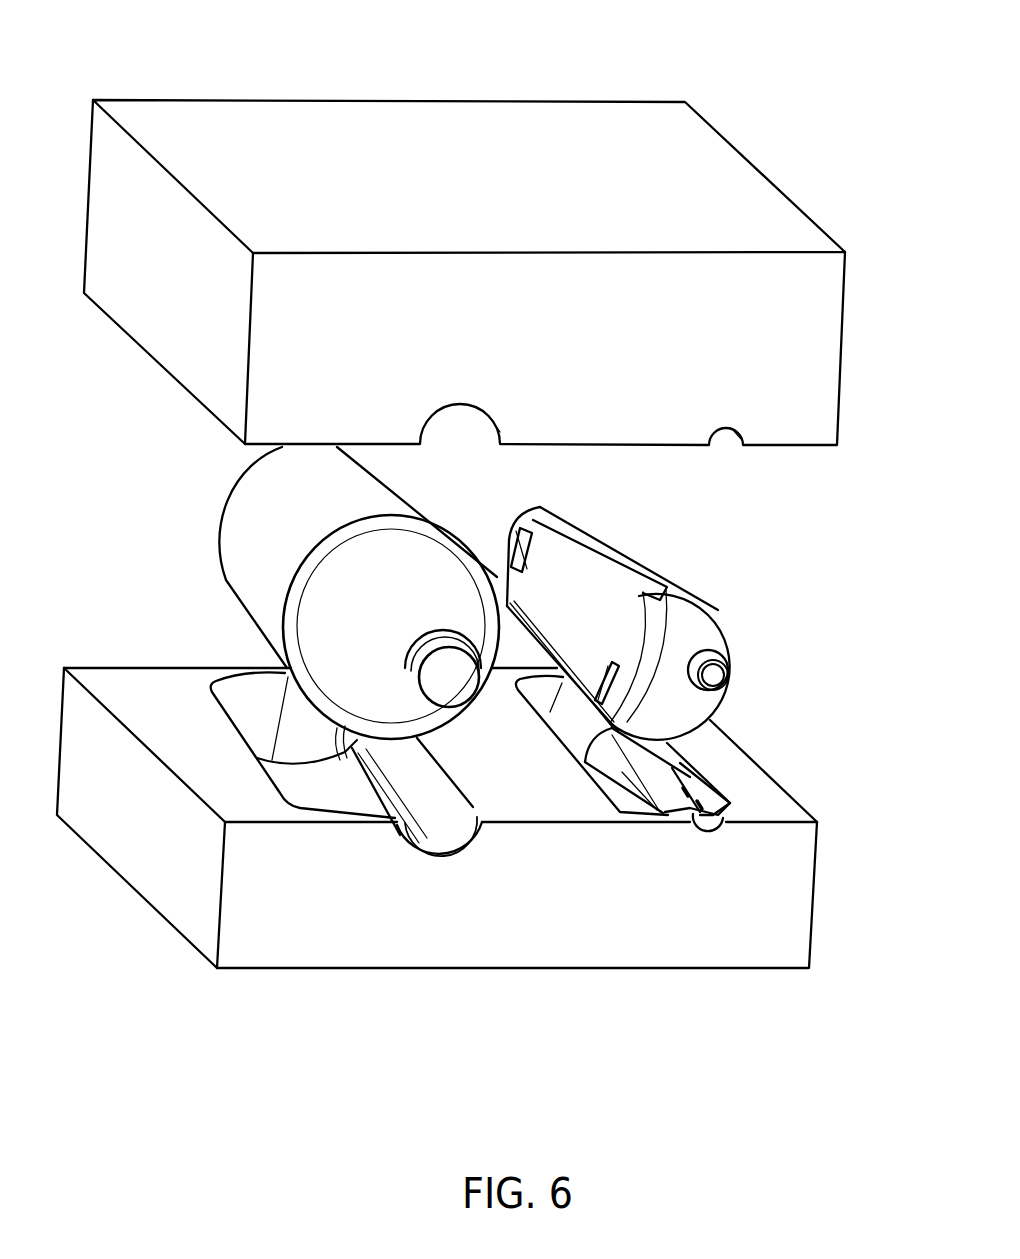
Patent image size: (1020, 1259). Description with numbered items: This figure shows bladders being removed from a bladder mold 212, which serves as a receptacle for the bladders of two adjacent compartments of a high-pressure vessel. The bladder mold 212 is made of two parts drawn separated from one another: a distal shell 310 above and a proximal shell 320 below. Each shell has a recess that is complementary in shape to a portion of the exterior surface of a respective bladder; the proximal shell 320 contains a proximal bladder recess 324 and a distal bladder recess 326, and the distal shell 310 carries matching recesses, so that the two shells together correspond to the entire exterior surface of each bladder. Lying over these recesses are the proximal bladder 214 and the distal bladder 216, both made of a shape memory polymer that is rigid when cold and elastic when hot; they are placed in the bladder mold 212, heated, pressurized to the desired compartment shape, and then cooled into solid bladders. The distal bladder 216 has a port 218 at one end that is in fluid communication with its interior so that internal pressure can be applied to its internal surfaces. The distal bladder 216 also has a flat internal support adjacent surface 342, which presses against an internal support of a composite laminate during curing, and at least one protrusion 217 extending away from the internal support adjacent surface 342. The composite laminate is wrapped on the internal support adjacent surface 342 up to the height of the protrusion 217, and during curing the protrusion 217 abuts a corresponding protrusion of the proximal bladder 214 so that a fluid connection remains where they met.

The bladder mold 212 is at (803, 87).
The distal shell 310 is at (218, 143).
The proximal shell 320 is at (173, 735).
The proximal bladder recess 324 is at (285, 743).
The distal bladder recess 326 is at (623, 737).
The proximal bladder 214 is at (265, 572).
The distal bladder 216 is at (710, 617).
The protrusion 217 is at (583, 533).
The internal support adjacent surface 342 is at (585, 597).
The port 218 is at (718, 653).